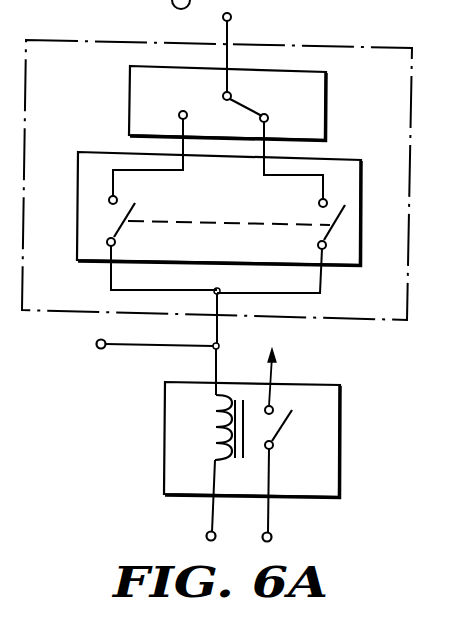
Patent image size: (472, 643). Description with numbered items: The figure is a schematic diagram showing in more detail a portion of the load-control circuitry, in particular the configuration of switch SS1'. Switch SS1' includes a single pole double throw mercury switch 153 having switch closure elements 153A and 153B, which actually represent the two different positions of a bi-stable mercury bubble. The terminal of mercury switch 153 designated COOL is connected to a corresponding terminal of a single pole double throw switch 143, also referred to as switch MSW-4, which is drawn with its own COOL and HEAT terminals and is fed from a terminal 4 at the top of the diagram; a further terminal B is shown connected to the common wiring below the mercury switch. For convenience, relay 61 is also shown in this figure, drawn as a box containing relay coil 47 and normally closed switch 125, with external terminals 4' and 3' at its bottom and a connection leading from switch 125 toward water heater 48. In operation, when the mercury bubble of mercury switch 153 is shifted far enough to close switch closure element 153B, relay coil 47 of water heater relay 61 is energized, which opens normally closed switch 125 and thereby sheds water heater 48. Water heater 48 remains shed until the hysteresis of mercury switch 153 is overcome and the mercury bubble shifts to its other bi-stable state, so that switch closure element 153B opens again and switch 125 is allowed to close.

The switch SS1' is at (217, 164).
The terminal 4 is at (241, 52).
The single pole double throw switch 143 is at (264, 100).
The mercury switch 153 is at (229, 193).
The switch closure element 153A is at (124, 227).
The switch closure element 153B is at (326, 228).
The terminal B is at (141, 346).
The water heater 48 is at (341, 366).
The water heater relay 61 is at (217, 442).
The relay coil 47 is at (208, 421).
The normally closed switch 125 is at (282, 429).
The terminal 4' is at (195, 502).
The terminal 3' is at (280, 498).